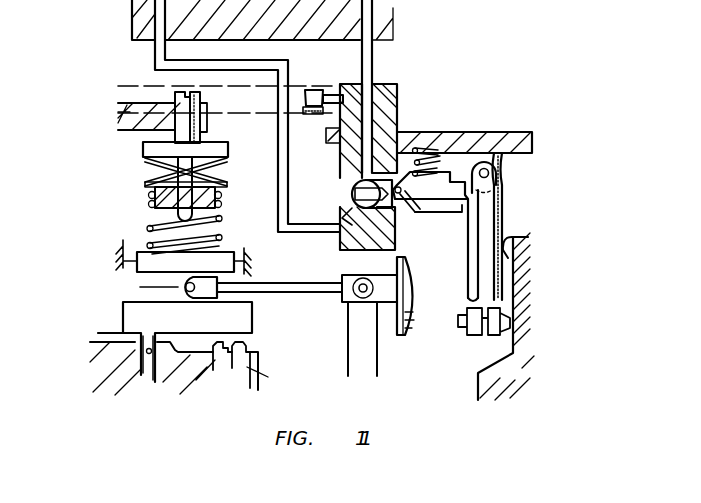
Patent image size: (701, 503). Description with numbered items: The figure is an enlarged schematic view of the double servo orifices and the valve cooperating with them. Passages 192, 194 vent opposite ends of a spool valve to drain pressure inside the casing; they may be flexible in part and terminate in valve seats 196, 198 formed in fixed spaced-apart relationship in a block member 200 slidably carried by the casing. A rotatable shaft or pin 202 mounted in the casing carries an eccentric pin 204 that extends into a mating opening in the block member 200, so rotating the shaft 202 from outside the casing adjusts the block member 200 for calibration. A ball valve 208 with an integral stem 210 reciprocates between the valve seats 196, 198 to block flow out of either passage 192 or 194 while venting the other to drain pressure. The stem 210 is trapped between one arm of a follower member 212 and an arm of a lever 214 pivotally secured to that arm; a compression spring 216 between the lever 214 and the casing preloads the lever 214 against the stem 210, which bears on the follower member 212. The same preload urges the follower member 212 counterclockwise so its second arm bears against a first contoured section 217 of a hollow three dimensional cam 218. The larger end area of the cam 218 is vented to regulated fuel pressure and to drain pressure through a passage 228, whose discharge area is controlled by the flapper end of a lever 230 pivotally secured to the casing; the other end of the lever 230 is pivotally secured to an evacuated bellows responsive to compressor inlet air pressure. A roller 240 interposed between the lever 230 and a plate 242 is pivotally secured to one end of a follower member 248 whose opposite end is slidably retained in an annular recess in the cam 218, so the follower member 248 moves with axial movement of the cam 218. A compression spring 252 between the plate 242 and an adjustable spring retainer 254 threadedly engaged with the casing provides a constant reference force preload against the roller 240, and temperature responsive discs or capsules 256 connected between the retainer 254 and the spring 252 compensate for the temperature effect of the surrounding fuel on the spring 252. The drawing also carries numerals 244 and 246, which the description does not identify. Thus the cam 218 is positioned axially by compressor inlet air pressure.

The passage 192 is at (155, 50).
The passage 194 is at (373, 60).
The valve seat 196 is at (352, 215).
The valve seat 198 is at (357, 183).
The block member 200 is at (393, 105).
The rotatable shaft or pin 202 is at (312, 90).
The eccentric pin 204 is at (336, 95).
The ball valve 208 is at (352, 183).
The stem 210 is at (352, 198).
The follower member 212 is at (450, 212).
The lever 214 is at (462, 185).
The compression spring 216 is at (423, 148).
The first contoured section 217 is at (507, 237).
The three dimensional cam 218 is at (533, 280).
The passage 228 is at (250, 370).
The lever 230 is at (135, 313).
The roller 240 is at (175, 287).
The plate 242 is at (198, 271).
The fixed mount 244 is at (130, 250).
The connecting rod 246 is at (292, 287).
The follower member 248 is at (363, 360).
The compression spring 252 is at (221, 219).
The adjustable spring retainer 254 is at (150, 151).
The temperature responsive discs or capsules 256 is at (145, 173).